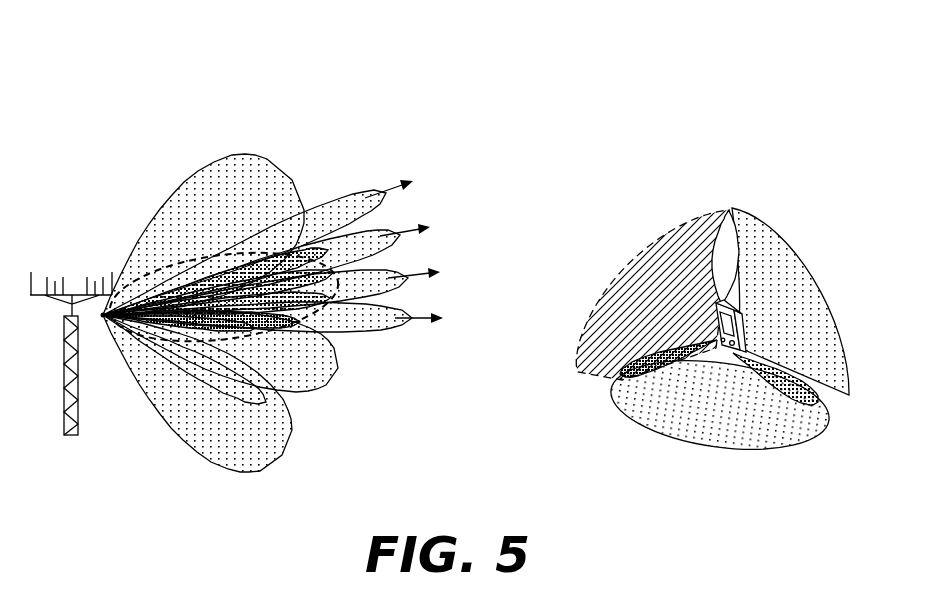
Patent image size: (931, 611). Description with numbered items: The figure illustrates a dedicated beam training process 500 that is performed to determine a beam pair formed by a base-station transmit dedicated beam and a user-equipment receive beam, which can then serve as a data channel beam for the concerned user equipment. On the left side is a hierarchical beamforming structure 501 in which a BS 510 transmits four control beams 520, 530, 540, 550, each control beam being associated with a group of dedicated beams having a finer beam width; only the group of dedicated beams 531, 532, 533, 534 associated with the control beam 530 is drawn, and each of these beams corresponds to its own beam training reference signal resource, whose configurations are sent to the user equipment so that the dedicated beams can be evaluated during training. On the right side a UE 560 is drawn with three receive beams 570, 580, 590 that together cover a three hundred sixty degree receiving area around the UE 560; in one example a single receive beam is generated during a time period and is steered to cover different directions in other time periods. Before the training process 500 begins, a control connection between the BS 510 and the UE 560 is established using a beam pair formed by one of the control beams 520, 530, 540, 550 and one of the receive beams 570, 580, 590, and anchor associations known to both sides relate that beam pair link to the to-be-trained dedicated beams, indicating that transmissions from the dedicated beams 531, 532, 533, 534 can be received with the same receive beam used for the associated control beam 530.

The dedicated beam training process 500 is at (648, 99).
The hierarchical beamforming structure 501 is at (326, 99).
The BS 510 is at (64, 372).
The control beam 520 is at (240, 157).
The control beam 530 is at (281, 240).
The dedicated beam 531 is at (368, 192).
The dedicated beam 532 is at (388, 248).
The dedicated beam 533 is at (390, 288).
The dedicated beam 534 is at (394, 327).
The control beam 540 is at (334, 362).
The control beam 550 is at (224, 476).
The UE 560 is at (720, 349).
The receive beam 570 is at (655, 253).
The receive beam 580 is at (762, 218).
The receive beam 590 is at (700, 443).